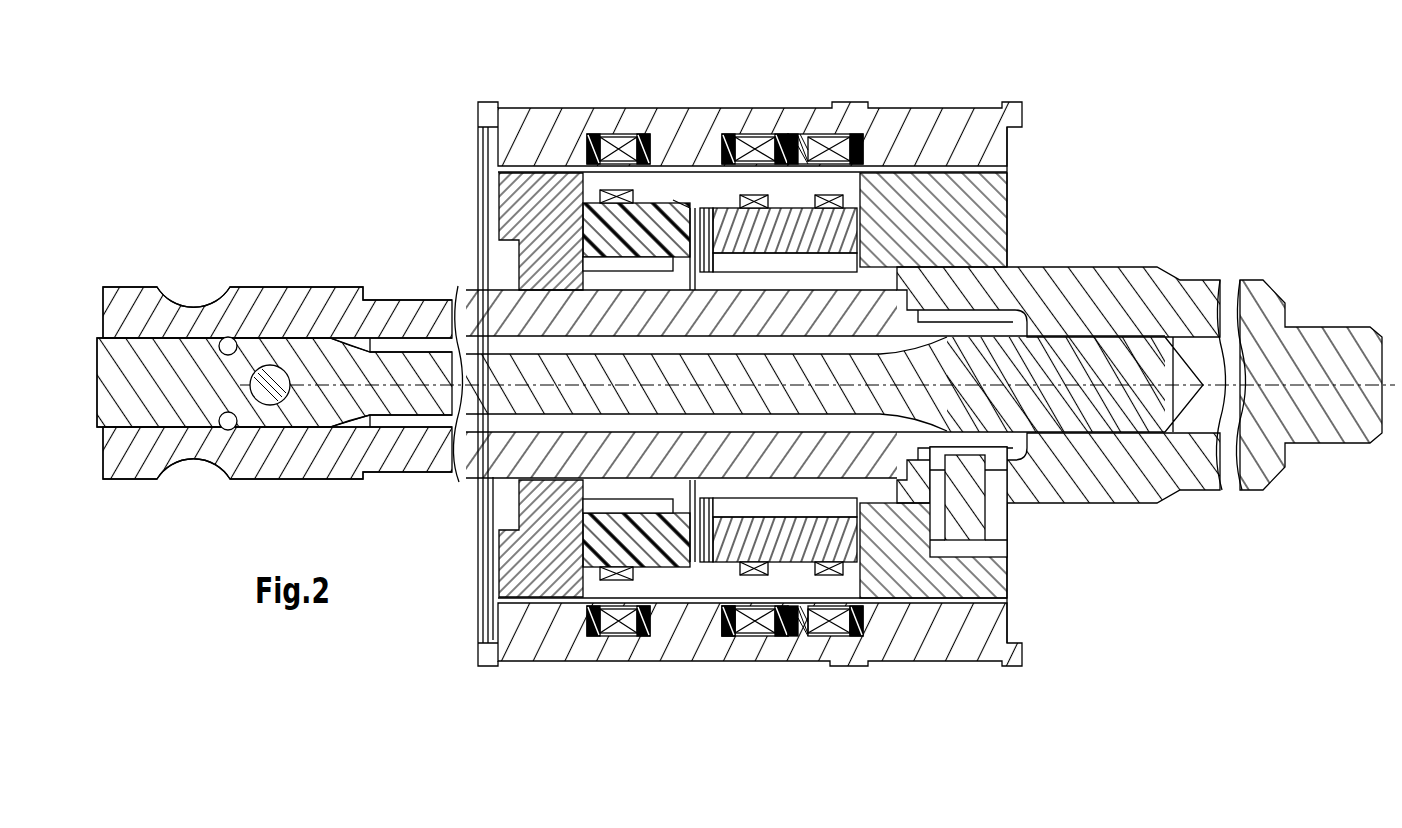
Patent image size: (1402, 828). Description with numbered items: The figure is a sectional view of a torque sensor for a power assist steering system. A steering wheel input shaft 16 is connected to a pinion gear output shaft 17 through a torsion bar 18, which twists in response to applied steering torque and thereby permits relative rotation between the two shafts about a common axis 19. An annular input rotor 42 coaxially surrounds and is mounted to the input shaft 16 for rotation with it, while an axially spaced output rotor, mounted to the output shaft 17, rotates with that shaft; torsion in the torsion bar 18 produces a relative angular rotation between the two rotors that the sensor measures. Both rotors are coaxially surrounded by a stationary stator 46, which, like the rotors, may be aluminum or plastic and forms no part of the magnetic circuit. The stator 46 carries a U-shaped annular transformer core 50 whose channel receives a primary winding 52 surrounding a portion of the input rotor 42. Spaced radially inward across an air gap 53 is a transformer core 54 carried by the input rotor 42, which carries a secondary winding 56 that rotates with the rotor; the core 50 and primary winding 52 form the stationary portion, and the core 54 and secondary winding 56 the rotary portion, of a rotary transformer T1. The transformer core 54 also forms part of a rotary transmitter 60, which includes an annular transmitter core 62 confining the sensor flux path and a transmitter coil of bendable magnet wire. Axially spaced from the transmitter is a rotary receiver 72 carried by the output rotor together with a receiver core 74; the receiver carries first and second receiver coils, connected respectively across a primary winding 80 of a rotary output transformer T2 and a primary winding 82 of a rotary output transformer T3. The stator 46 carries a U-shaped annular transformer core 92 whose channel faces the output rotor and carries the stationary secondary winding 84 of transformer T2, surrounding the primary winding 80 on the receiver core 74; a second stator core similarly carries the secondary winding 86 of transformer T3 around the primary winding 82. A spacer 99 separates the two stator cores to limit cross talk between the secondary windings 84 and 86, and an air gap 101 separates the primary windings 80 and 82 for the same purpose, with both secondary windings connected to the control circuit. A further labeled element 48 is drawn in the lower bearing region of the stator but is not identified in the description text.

The input shaft 16 is at (262, 305).
The output shaft 17 is at (1125, 285).
The torsion bar 18 is at (420, 375).
The common axis 19 is at (1392, 383).
The input rotor 42 is at (510, 217).
The stator 46 is at (876, 122).
The bearing 48 is at (827, 627).
The transformer core 50 is at (628, 636).
The primary winding 52 is at (612, 636).
The air gap 53 is at (570, 170).
The transformer core 54 is at (600, 543).
The secondary winding 56 is at (620, 581).
The rotary transmitter 60 is at (655, 212).
The transmitter core 62 is at (673, 198).
The rotary receiver 72 is at (738, 196).
The receiver core 74 is at (788, 207).
The primary winding 80 is at (755, 578).
The primary winding 82 is at (830, 570).
The secondary winding 84 is at (903, 135).
The secondary winding 86 is at (836, 625).
The transformer core 92 is at (727, 620).
The spacer 99 is at (798, 648).
The air gap 101 is at (867, 608).
The rotary transformer T1 is at (478, 167).
The rotary output transformer T2 is at (899, 128).
The rotary output transformer T3 is at (973, 128).